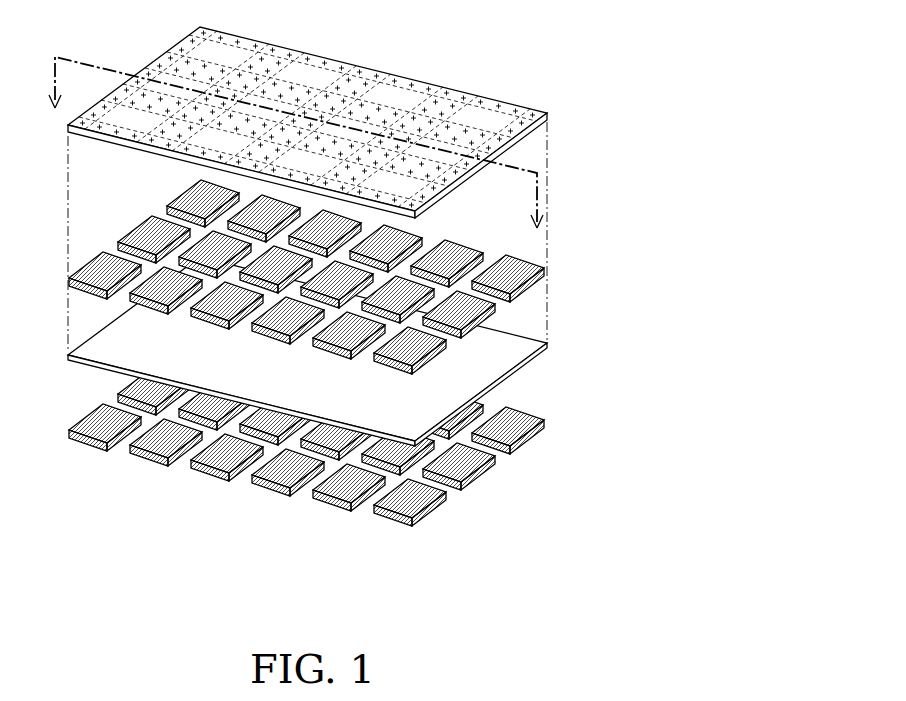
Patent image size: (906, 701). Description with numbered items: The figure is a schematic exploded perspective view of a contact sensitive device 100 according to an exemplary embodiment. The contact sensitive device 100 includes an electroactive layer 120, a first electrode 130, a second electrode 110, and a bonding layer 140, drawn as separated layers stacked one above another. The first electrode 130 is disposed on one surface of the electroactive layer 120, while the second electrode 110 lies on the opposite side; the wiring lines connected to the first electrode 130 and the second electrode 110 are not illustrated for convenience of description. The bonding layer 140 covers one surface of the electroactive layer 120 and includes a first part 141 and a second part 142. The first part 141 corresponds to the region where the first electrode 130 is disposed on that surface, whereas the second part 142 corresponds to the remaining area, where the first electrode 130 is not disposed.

The contact sensitive device 100 is at (609, 32).
The second electrode 110 is at (497, 463).
The electroactive layer 120 is at (500, 333).
The first electrode 130 is at (465, 244).
The bonding layer 140 is at (412, 122).
The first part of the bonding layer 141 is at (462, 152).
The second part of the bonding layer 142 is at (440, 178).